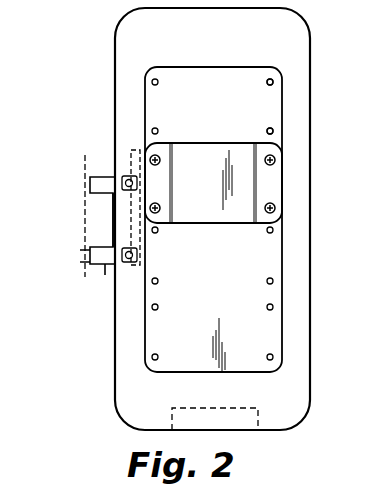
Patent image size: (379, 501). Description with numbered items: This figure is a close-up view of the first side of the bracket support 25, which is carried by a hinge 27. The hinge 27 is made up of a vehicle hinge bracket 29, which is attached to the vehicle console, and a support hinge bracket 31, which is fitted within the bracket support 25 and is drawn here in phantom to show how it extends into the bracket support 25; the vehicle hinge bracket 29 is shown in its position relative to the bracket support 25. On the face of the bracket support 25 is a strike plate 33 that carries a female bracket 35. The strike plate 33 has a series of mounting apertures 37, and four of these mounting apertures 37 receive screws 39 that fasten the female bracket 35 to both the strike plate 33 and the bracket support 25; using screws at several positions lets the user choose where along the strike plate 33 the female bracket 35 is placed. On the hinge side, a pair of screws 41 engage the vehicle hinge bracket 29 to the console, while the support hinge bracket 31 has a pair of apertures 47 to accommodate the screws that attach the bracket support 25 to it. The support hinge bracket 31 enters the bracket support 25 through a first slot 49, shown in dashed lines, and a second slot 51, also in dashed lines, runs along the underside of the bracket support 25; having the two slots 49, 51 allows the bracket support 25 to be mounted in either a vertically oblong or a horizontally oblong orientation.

The bracket support 25 is at (310, 372).
The hinge 27 is at (82, 186).
The vehicle hinge bracket 29 is at (85, 223).
The support hinge bracket 31 is at (105, 270).
The strike plate 33 is at (222, 282).
The female bracket 35 is at (212, 195).
The mounting apertures 37 is at (273, 82).
The screws 39 is at (275, 162).
The screws 41 is at (82, 257).
The apertures 47 is at (125, 183).
The first slot 49 is at (131, 152).
The second slot 51 is at (258, 407).